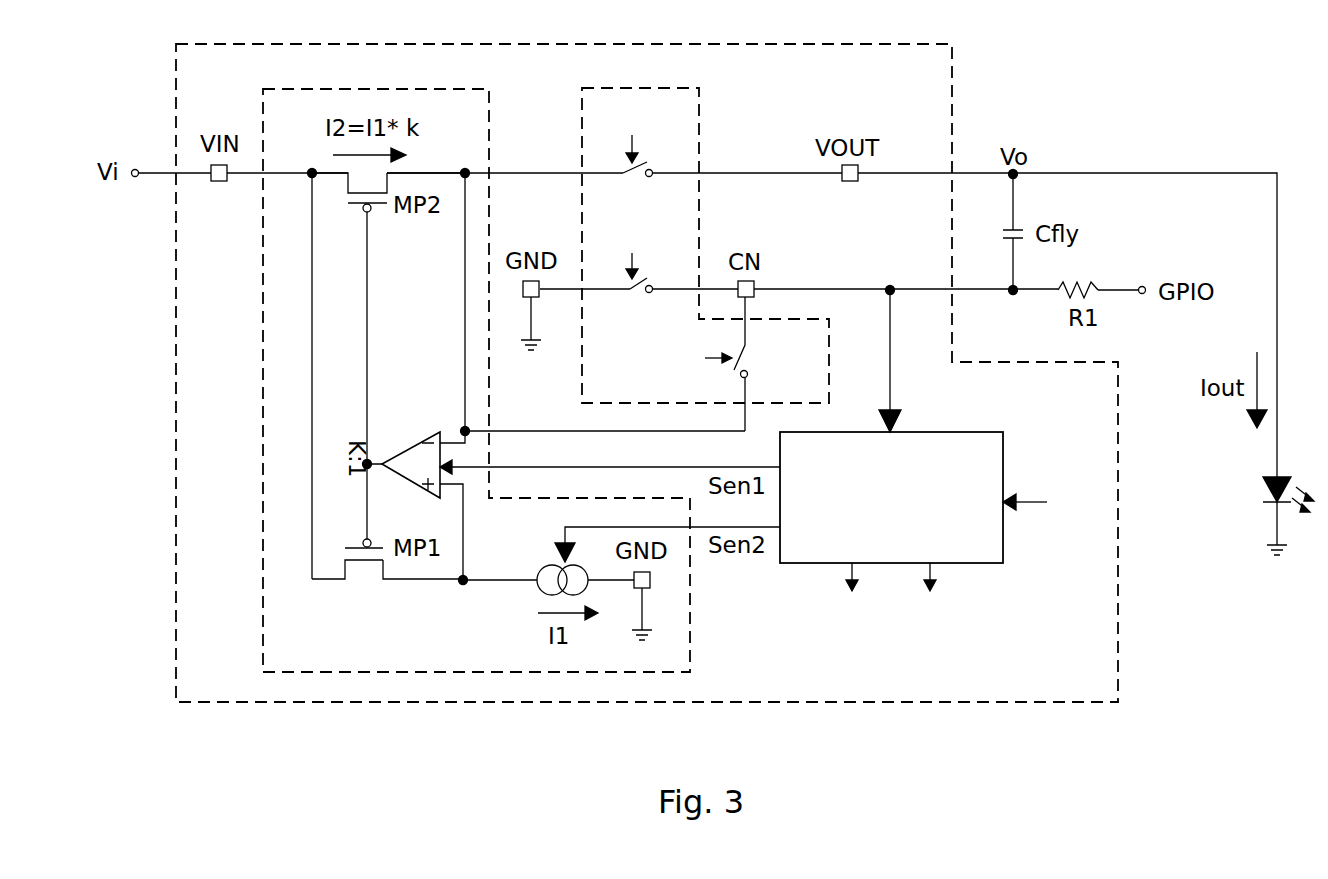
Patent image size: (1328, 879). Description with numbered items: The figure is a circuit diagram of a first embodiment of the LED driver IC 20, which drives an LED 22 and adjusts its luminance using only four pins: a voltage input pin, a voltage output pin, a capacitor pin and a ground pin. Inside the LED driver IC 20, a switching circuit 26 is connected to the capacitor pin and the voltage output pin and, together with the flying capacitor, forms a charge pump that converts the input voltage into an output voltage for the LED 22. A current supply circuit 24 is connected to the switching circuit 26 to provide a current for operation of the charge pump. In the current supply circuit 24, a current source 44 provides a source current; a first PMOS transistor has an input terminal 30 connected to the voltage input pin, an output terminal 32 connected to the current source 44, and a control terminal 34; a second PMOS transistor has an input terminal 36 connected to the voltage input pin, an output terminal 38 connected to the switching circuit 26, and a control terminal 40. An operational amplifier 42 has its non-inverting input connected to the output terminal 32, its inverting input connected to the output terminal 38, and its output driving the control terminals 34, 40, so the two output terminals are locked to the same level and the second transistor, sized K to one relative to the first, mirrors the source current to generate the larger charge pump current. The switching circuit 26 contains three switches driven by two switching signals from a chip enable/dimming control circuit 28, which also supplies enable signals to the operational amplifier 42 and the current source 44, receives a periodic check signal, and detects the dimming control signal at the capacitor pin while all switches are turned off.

The LED driver IC 20 is at (952, 125).
The LED 22 is at (1263, 490).
The current supply circuit 24 is at (262, 395).
The switching circuit 26 is at (699, 137).
The chip enable/dimming control circuit 28 is at (1003, 538).
The input terminal 30 is at (323, 580).
The output terminal 32 is at (408, 580).
The control terminal 34 is at (365, 505).
The input terminal 36 is at (337, 173).
The output terminal 38 is at (432, 173).
The control terminal 40 is at (367, 325).
The operational amplifier 42 is at (425, 440).
The current source 44 is at (537, 566).